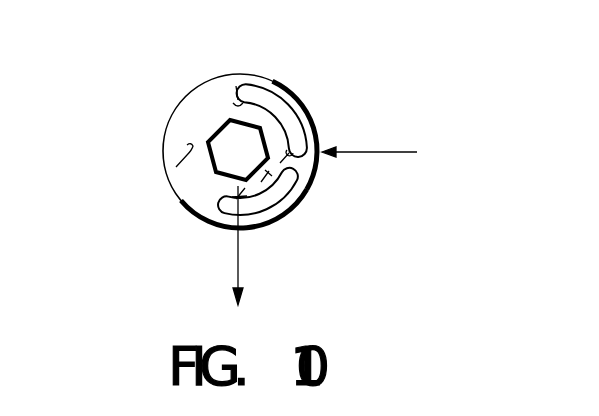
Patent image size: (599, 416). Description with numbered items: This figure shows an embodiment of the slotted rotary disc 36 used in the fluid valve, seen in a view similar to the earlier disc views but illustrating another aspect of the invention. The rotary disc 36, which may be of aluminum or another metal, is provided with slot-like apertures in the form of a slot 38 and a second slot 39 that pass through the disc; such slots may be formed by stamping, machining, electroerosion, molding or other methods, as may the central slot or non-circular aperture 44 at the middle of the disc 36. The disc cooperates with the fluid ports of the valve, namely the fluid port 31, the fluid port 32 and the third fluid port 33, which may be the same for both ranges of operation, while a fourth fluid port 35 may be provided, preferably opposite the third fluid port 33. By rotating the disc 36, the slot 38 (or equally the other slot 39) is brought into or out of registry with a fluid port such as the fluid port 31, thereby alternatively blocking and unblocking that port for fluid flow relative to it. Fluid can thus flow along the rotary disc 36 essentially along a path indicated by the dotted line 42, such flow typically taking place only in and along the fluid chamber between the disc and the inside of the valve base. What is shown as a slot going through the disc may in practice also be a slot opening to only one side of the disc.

The fluid port 31 is at (244, 227).
The fluid port 32 is at (233, 72).
The third fluid port 33 is at (318, 125).
The fourth fluid port 35 is at (167, 177).
The rotary disc 36 is at (311, 181).
The slot 38 is at (278, 110).
The slot 39 is at (290, 189).
The dotted line 42 is at (280, 200).
The central slot or non-circular aperture 44 is at (228, 122).